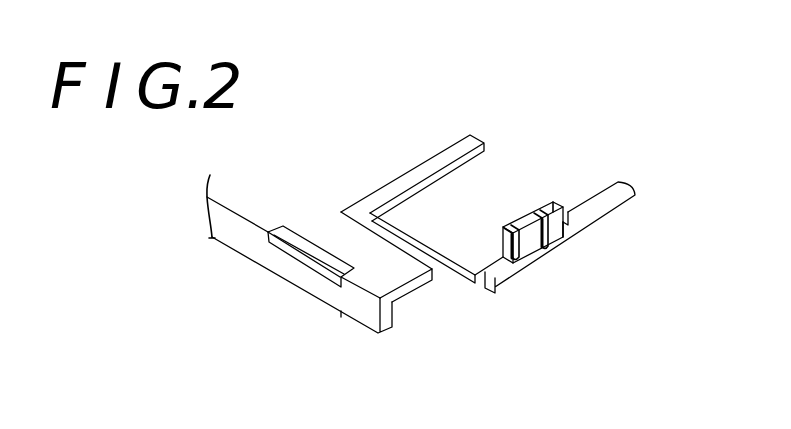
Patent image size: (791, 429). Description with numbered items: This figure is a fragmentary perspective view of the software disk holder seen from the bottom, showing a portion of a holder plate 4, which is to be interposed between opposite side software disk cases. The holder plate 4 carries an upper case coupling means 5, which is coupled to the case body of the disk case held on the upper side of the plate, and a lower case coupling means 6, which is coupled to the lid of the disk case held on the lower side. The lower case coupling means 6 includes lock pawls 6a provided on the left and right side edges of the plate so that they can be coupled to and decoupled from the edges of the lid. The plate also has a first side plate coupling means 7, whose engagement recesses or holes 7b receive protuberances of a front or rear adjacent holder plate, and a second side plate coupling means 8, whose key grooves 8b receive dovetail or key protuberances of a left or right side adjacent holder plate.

The holder plate 4 is at (618, 194).
The upper case coupling means 5 is at (322, 312).
The lower case coupling means 6 is at (523, 248).
The lock pawl 6a is at (499, 244).
The first side plate coupling means 7 is at (270, 254).
The engagement recess or hole 7b is at (311, 258).
The second side plate coupling means 8 is at (560, 243).
The key groove 8b is at (541, 218).